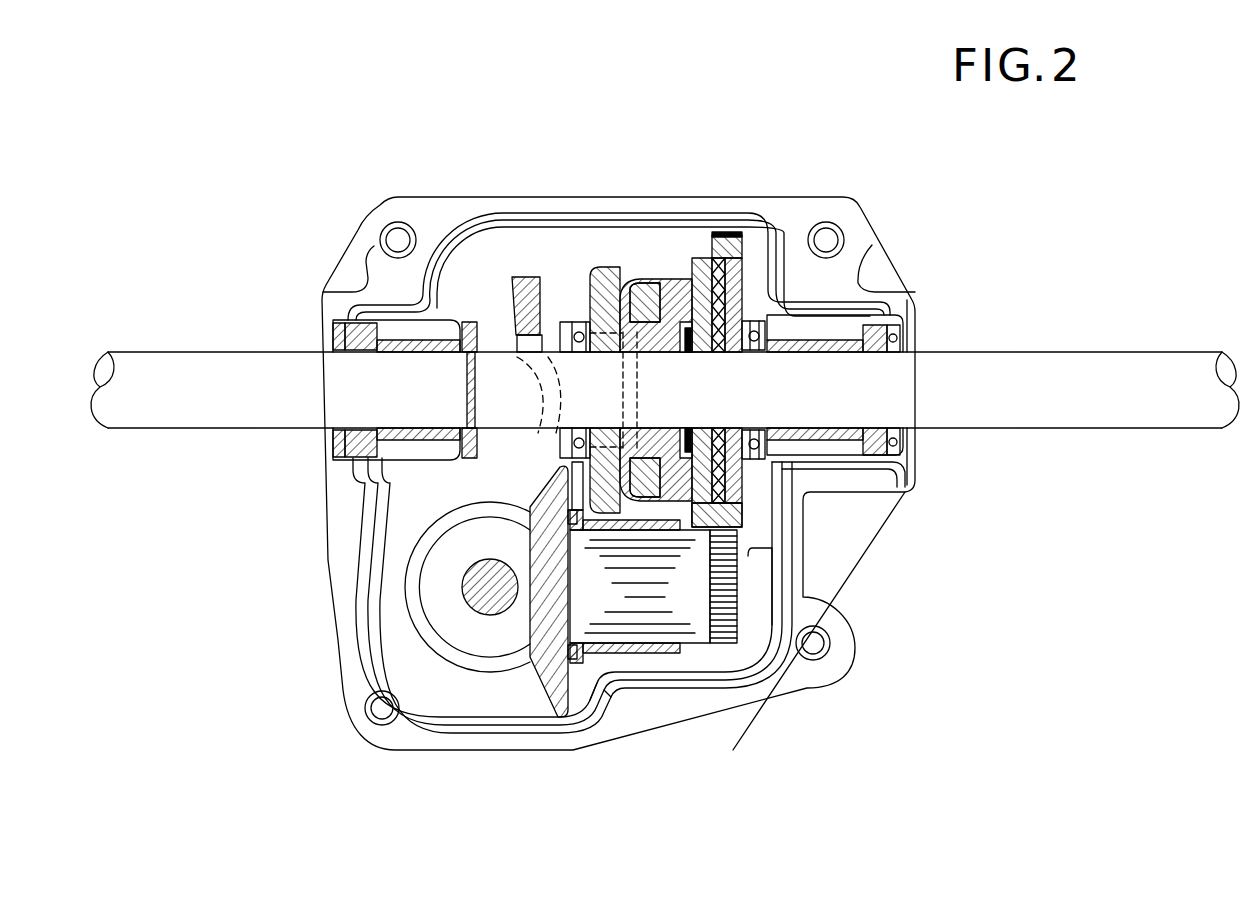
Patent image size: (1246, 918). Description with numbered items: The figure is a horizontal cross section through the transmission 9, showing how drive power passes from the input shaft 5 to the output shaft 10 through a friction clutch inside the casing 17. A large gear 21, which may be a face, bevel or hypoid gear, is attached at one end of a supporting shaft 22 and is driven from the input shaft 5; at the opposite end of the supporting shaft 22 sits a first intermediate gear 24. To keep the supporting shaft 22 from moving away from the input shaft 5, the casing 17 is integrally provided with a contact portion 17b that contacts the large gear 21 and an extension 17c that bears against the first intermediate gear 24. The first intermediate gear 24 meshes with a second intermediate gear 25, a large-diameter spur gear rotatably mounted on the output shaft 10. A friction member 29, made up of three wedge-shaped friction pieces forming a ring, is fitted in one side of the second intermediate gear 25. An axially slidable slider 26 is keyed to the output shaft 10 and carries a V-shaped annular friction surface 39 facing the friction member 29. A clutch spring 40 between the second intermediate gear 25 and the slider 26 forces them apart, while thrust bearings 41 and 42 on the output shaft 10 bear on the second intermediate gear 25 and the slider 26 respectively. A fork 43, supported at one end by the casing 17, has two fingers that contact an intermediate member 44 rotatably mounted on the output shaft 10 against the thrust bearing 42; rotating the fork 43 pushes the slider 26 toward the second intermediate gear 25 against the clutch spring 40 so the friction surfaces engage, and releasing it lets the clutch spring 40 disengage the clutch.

The input shaft 5 is at (493, 612).
The transmission 9 is at (957, 233).
The output shaft 10 is at (1001, 424).
The casing 17 is at (895, 485).
The contact portion 17b is at (610, 697).
The extension 17c is at (748, 556).
The large gear 21 is at (547, 695).
The supporting shaft 22 is at (677, 622).
The first intermediate gear 24 is at (727, 633).
The second intermediate gear 25 is at (742, 265).
The slider 26 is at (590, 265).
The friction member 29 is at (690, 300).
The friction surface 39 is at (637, 262).
The clutch spring 40 is at (652, 275).
The thrust bearing 41 is at (748, 250).
The thrust bearing 42 is at (573, 315).
The fork 43 is at (512, 340).
The intermediate member 44 is at (537, 277).